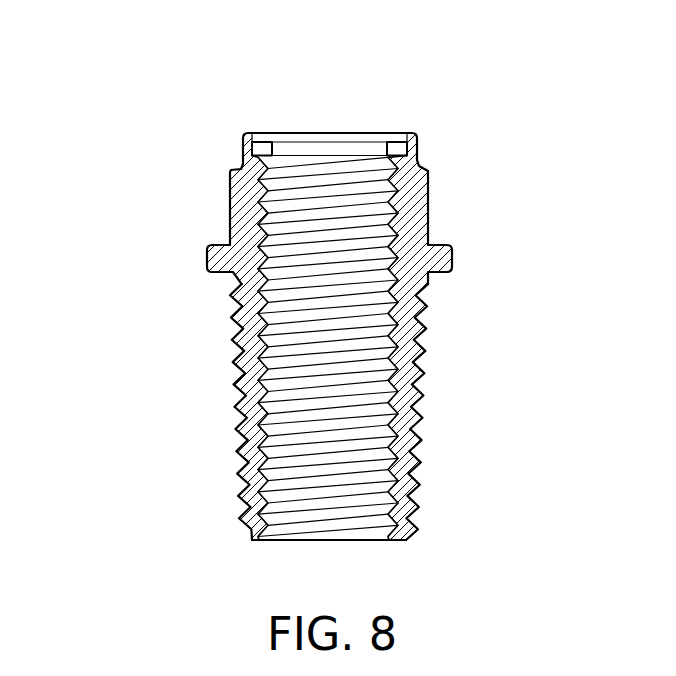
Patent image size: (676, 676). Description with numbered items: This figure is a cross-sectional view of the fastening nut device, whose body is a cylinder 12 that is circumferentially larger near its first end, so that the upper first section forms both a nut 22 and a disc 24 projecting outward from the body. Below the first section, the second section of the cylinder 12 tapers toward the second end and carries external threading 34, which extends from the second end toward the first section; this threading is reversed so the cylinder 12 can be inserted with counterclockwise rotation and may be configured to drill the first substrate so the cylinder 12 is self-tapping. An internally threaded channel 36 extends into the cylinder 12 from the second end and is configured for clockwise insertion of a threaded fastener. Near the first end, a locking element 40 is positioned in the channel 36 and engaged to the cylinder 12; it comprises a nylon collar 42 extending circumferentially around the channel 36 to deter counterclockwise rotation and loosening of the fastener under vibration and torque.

The cylinder 12 is at (425, 455).
The nut 22 is at (220, 207).
The disc 24 is at (460, 260).
The external threading 34 is at (438, 360).
The channel 36 is at (340, 268).
The locking element 40 is at (276, 142).
The nylon collar 42 is at (403, 138).